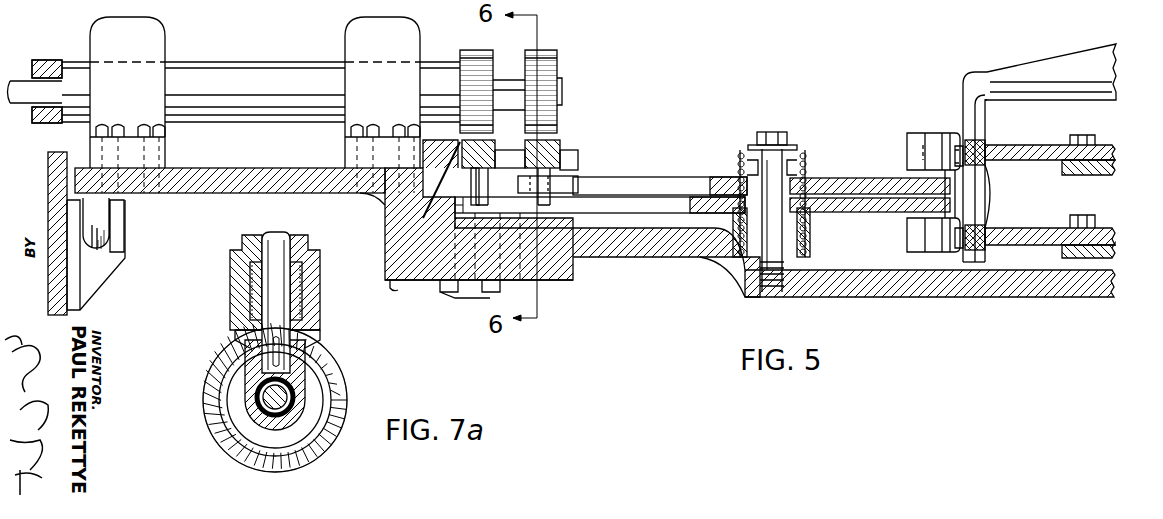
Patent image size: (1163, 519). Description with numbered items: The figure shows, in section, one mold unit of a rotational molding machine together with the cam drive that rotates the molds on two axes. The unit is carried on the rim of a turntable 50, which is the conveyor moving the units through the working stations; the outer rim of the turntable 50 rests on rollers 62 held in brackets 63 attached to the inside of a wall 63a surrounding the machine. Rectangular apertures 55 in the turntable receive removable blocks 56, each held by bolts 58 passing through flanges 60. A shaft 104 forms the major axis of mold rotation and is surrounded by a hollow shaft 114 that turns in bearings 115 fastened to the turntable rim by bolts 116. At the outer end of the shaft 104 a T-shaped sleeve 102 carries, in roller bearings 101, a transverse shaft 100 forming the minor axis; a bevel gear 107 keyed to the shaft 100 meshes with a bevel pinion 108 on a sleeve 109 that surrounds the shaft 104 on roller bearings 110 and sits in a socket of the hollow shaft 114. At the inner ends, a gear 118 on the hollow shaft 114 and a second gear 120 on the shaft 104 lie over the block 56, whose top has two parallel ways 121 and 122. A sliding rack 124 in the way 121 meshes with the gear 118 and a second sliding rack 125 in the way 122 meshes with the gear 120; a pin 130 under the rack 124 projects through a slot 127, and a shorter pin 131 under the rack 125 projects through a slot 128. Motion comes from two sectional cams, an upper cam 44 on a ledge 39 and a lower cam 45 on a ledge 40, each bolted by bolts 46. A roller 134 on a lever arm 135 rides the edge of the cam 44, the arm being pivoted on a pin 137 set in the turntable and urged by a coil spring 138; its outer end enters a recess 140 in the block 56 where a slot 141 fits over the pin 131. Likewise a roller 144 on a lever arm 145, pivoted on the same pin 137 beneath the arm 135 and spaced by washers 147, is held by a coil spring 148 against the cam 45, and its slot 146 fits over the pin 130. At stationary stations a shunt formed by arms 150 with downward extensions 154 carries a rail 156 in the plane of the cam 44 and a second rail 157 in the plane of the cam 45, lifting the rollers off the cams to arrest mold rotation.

In FIG. 5, the shaft 104 is at (24, 84).
In FIG. 7a, the shaft 104 is at (268, 240).
In FIG. 5, the hollow shaft 114 is at (190, 66).
In FIG. 5, the bearings 115 is at (158, 46).
In FIG. 5, the bolts 116 is at (152, 124).
In FIG. 5, the gear 118 is at (476, 56).
In FIG. 5, the second gear 120 is at (550, 58).
In FIG. 5, the way 121 is at (487, 152).
In FIG. 5, the way 122 is at (578, 160).
In FIG. 5, the sliding rack 124 is at (441, 171).
In FIG. 5, the second sliding rack 125 is at (555, 152).
In FIG. 5, the slot 127 is at (472, 174).
In FIG. 5, the slot 128 is at (578, 167).
In FIG. 5, the pin 130 is at (530, 185).
In FIG. 5, the pin 131 is at (578, 189).
In FIG. 5, the roller 134 is at (916, 133).
In FIG. 5, the lever arm 135 is at (850, 178).
In FIG. 5, the pin 137 is at (768, 283).
In FIG. 5, the coil spring 138 is at (790, 154).
In FIG. 5, the recess 140 is at (576, 213).
In FIG. 5, the slot 141 is at (563, 214).
In FIG. 5, the roller 144 is at (912, 238).
In FIG. 5, the lever arm 145 is at (850, 213).
In FIG. 5, the slot 146 is at (430, 208).
In FIG. 5, the washers 147 is at (801, 180).
In FIG. 5, the coil spring 148 is at (742, 268).
In FIG. 5, the arms 150 is at (1049, 80).
In FIG. 5, the downward extension 154 is at (975, 133).
In FIG. 5, the rail 156 is at (987, 170).
In FIG. 5, the second rail 157 is at (985, 233).
In FIG. 5, the ledge 39 is at (1093, 181).
In FIG. 5, the ledge 40 is at (1104, 238).
In FIG. 5, the upper cam 44 is at (1020, 151).
In FIG. 5, the lower cam 45 is at (1030, 233).
In FIG. 5, the bolts 46 is at (1082, 137).
In FIG. 5, the turntable 50 is at (962, 291).
In FIG. 5, the rectangular apertures 55 is at (573, 262).
In FIG. 5, the removable block 56 is at (553, 282).
In FIG. 5, the bolts 58 is at (515, 290).
In FIG. 5, the flanges 60 is at (395, 282).
In FIG. 5, the rollers 62 is at (110, 250).
In FIG. 5, the brackets 63 is at (96, 280).
In FIG. 5, the wall 63a is at (57, 281).
In FIG. 7a, the shaft 100 is at (243, 400).
In FIG. 7a, the roller bearings 101 is at (298, 386).
In FIG. 7a, the T-shaped sleeve 102 is at (306, 408).
In FIG. 7a, the bevel gear 107 is at (329, 440).
In FIG. 7a, the bevel pinion 108 is at (319, 333).
In FIG. 7a, the sleeve 109 is at (306, 300).
In FIG. 7a, the roller bearings 110 is at (303, 283).